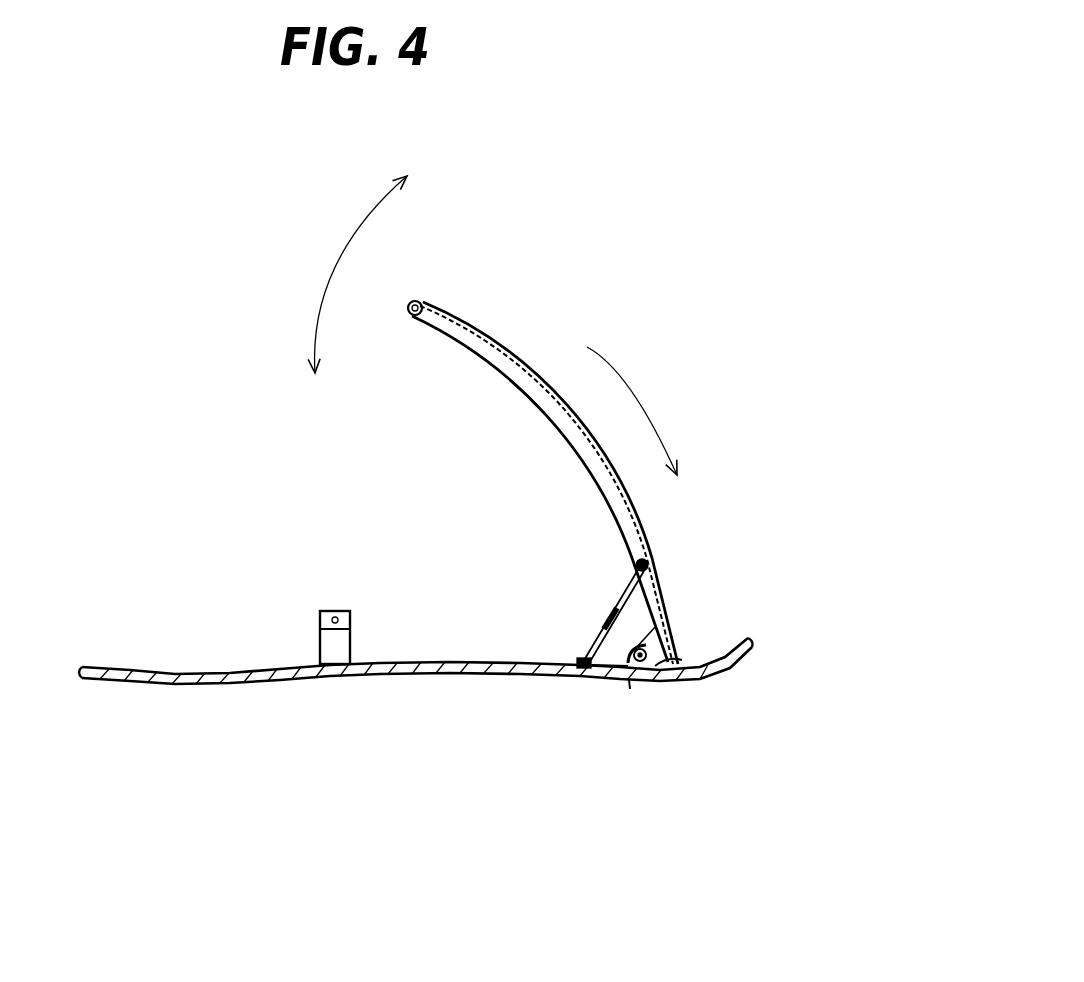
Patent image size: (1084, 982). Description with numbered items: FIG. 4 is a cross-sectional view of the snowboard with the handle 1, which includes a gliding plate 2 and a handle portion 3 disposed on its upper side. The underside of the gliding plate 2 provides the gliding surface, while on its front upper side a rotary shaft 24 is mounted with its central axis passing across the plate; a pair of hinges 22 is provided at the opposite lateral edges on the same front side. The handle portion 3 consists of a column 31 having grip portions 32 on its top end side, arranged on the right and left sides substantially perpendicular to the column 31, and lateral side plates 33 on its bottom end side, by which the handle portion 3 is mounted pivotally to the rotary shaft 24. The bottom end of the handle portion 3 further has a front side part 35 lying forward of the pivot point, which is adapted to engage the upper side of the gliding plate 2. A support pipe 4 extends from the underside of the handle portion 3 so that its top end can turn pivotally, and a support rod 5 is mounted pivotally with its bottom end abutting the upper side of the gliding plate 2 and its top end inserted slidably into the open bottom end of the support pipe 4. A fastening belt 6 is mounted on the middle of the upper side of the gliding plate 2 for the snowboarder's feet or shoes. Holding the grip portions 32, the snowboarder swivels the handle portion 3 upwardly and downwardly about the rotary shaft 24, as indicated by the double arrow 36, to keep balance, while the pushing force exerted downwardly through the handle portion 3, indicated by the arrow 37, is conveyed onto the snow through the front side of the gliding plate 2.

The snowboard with handle 1 is at (651, 506).
The gliding plate 2 is at (235, 683).
The handle portion 3 is at (543, 404).
The support pipe 4 is at (645, 564).
The support rod 5 is at (580, 660).
The fastening belt 6 is at (337, 640).
The hinge 22 is at (628, 681).
The rotary shaft 24 is at (677, 679).
The column 31 is at (505, 345).
The grip portion 32 is at (418, 301).
The lateral side plate 33 is at (657, 647).
The front side part 35 is at (750, 642).
The double arrow 36 is at (332, 257).
The arrow 37 is at (643, 413).